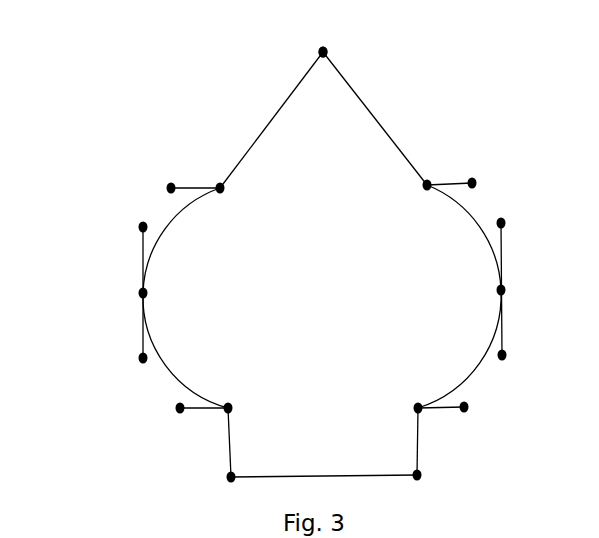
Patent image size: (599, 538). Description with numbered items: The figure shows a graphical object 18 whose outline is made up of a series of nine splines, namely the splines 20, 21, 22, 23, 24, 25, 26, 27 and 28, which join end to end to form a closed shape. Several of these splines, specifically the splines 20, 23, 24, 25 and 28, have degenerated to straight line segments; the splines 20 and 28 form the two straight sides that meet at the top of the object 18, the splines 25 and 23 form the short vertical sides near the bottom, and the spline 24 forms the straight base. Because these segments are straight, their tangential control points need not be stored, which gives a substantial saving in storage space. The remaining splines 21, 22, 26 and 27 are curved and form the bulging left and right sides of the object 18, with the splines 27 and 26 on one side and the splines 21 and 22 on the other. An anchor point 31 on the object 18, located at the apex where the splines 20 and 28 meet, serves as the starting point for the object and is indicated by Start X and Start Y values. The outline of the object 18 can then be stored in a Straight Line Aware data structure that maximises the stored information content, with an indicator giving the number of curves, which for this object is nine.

The object 18 is at (85, 65).
The anchor point 31 is at (329, 54).
The spline 20 is at (377, 117).
The spline 28 is at (268, 127).
The spline 27 is at (165, 217).
The spline 26 is at (155, 360).
The spline 21 is at (470, 195).
The spline 22 is at (478, 367).
The spline 25 is at (227, 453).
The spline 23 is at (417, 433).
The spline 24 is at (313, 476).